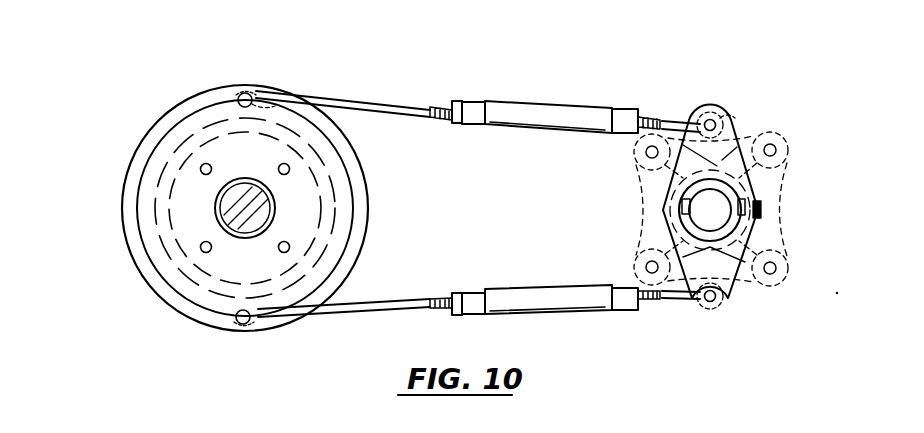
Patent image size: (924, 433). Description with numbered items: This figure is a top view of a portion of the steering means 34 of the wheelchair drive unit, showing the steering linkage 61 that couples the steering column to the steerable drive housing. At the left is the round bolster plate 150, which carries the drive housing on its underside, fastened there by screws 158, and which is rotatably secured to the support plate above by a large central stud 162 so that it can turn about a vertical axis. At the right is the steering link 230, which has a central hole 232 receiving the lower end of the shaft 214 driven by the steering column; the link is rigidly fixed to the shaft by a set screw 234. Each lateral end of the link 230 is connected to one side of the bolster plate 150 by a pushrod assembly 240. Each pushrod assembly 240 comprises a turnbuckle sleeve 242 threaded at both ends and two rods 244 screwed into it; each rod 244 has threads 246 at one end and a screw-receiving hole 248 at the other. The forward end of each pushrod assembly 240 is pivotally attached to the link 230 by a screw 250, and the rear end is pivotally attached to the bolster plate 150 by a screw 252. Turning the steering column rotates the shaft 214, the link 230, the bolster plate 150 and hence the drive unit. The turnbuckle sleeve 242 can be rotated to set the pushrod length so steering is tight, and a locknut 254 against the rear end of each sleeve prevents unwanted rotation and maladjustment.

The bolster plate 150 is at (145, 137).
The stud 162 is at (218, 213).
The screws 158 is at (265, 156).
The screw 252 is at (245, 92).
The screw-receiving hole 248 is at (261, 92).
The rods 244 is at (377, 82).
The threads 246 is at (430, 106).
The locknut 254 is at (457, 118).
The turnbuckle sleeve 242 is at (494, 100).
The pushrod assembly 240 is at (550, 195).
The steering linkage 61 is at (732, 209).
The steering link 230 is at (674, 250).
The shaft 214 is at (667, 214).
The central hole 232 is at (685, 197).
The set screw 234 is at (762, 206).
The screw 250 is at (714, 127).
The steering means 34 is at (817, 218).